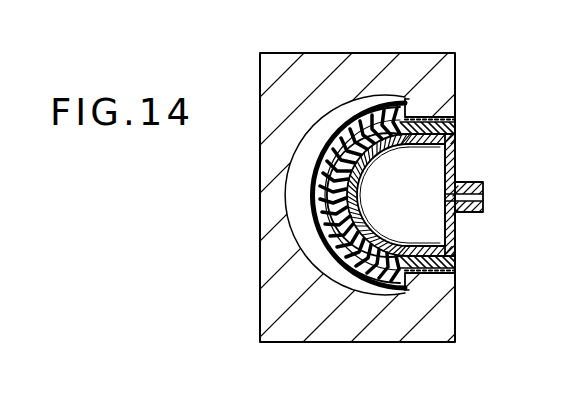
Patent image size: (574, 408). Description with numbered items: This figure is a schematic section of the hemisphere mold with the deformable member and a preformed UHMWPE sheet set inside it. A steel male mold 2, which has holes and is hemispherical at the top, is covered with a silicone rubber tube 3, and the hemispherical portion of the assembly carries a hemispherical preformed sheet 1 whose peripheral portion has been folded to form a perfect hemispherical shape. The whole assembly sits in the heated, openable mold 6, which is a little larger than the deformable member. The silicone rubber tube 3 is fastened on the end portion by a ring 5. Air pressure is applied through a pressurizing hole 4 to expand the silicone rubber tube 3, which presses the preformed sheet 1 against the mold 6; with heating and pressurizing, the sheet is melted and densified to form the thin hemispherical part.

The preformed sheet 1 is at (332, 223).
The steel male mold 2 is at (453, 150).
The silicone rubber tube 3 is at (332, 163).
The pressurizing hole 4 is at (483, 197).
The ring 5 is at (433, 273).
The mold 6 is at (415, 67).